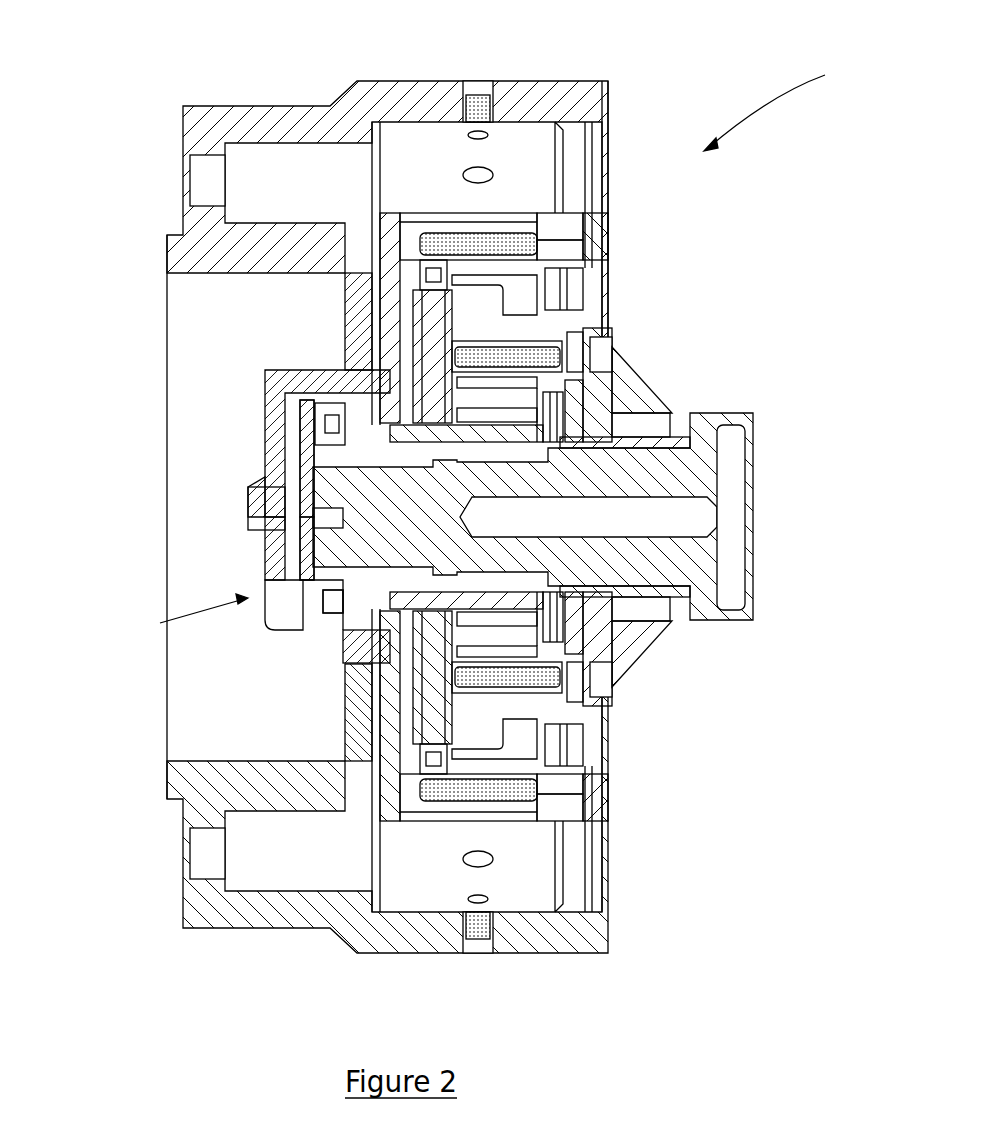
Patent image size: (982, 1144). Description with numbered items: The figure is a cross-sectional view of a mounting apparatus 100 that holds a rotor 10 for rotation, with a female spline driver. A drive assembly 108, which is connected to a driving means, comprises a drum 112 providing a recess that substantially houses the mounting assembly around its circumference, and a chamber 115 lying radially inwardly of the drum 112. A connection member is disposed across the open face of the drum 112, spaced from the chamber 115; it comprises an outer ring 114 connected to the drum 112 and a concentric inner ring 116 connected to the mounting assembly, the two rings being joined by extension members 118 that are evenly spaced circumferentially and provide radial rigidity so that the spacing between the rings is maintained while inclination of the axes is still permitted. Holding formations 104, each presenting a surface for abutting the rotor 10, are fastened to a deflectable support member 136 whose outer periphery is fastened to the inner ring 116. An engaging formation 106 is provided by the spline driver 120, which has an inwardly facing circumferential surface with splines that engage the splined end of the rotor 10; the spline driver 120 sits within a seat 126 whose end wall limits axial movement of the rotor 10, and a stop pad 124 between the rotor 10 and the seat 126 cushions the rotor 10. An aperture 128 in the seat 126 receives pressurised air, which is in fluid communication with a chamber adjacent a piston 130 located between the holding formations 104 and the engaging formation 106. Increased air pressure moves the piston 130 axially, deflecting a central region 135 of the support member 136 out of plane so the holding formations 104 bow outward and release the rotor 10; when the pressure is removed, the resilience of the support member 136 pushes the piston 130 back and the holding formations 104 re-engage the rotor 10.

The mounting apparatus 100 is at (781, 104).
The rotor 10 is at (650, 525).
The holding formations 104 is at (645, 378).
The engaging formation 106 is at (160, 623).
The first portion / drive assembly 108 is at (240, 960).
The drum 112 is at (330, 100).
The outer ring 114 is at (610, 95).
The chamber 115 is at (185, 318).
The inner ring 116 is at (612, 240).
The extension members 118 is at (612, 880).
The spline driver 120 is at (300, 605).
The stop pad 124 is at (263, 553).
The seat 126 is at (300, 435).
The aperture 128 is at (250, 520).
The piston 130 is at (370, 345).
The central region 135 is at (615, 432).
The support member 136 is at (545, 330).